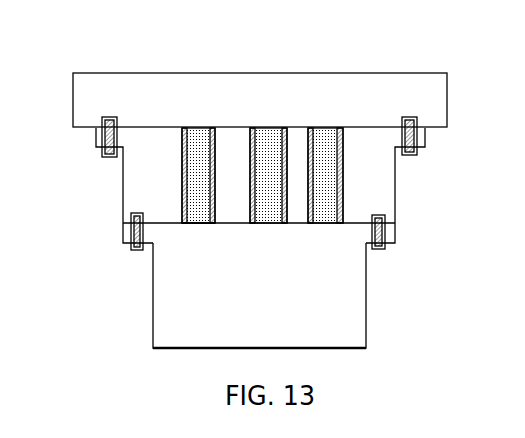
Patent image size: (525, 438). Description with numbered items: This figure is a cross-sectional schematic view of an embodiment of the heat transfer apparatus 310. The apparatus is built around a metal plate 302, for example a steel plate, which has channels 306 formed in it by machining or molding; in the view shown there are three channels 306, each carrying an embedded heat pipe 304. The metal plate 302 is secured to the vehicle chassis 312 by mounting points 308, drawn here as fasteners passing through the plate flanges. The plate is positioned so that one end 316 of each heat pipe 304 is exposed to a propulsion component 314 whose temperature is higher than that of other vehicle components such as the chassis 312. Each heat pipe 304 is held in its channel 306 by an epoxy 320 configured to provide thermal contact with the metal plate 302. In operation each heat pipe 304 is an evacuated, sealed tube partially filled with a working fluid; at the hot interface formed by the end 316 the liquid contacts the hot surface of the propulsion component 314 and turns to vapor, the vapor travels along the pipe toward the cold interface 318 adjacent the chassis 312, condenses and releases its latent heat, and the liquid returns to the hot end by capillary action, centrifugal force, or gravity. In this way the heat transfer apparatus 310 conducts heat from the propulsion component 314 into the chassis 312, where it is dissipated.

The heat transfer apparatus 310 is at (84, 258).
The vehicle chassis 312 is at (345, 73).
The metal plate 302 is at (385, 172).
The propulsion component 314 is at (366, 292).
The heat pipe 304 is at (192, 135).
The channel 306 is at (182, 153).
The cold interface 318 is at (193, 133).
The epoxy 320 is at (284, 128).
The end of heat pipe (hot interface) 316 is at (195, 223).
The mounting point 308 is at (103, 148).